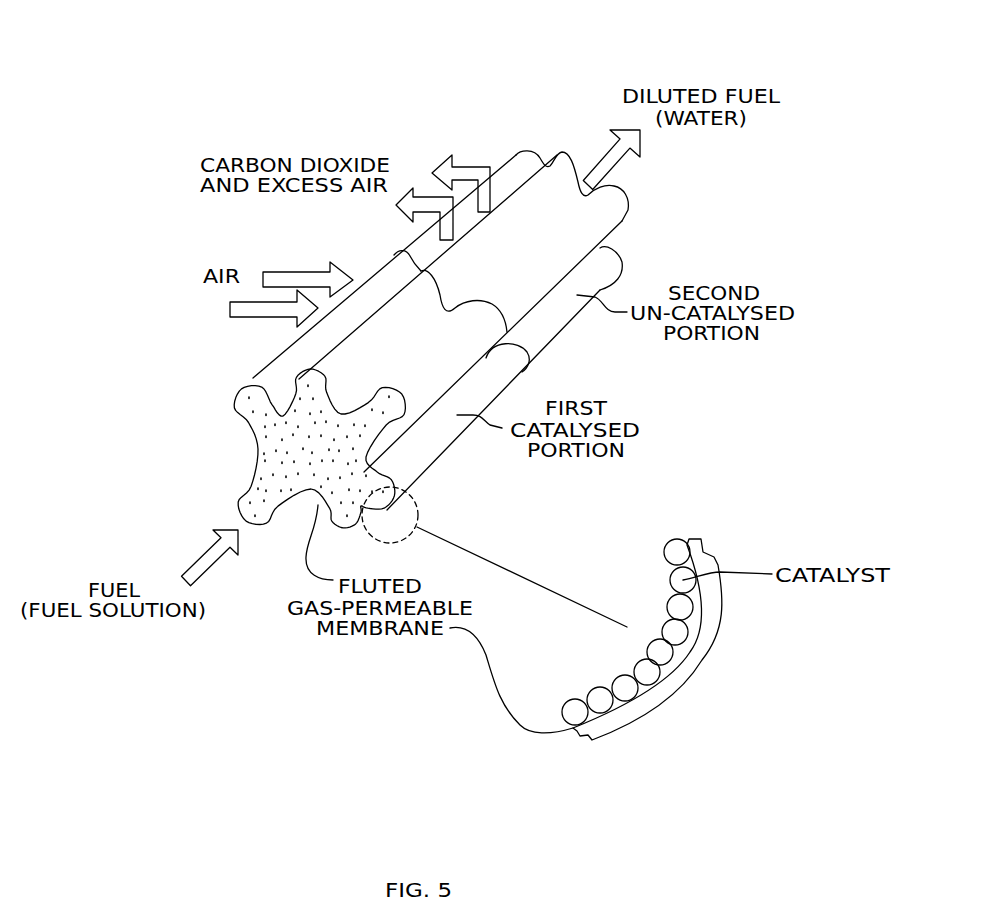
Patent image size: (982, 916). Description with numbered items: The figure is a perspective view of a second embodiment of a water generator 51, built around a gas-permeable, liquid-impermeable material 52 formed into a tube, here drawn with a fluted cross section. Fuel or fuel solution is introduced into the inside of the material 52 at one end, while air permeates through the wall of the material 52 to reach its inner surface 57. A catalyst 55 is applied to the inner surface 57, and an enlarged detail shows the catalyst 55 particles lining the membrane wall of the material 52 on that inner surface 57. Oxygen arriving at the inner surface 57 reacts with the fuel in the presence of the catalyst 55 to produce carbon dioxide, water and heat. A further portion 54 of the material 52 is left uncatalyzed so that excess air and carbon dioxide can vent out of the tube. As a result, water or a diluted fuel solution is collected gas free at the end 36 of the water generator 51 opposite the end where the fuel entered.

The water generator 51 is at (299, 85).
The gas-permeable, liquid-impermeable material 52 is at (514, 160).
The diluted fuel outlet end 36 is at (622, 188).
The uncatalyzed portion 54 is at (540, 340).
The catalyst 55 is at (370, 478).
The inner surface 57 is at (271, 456).